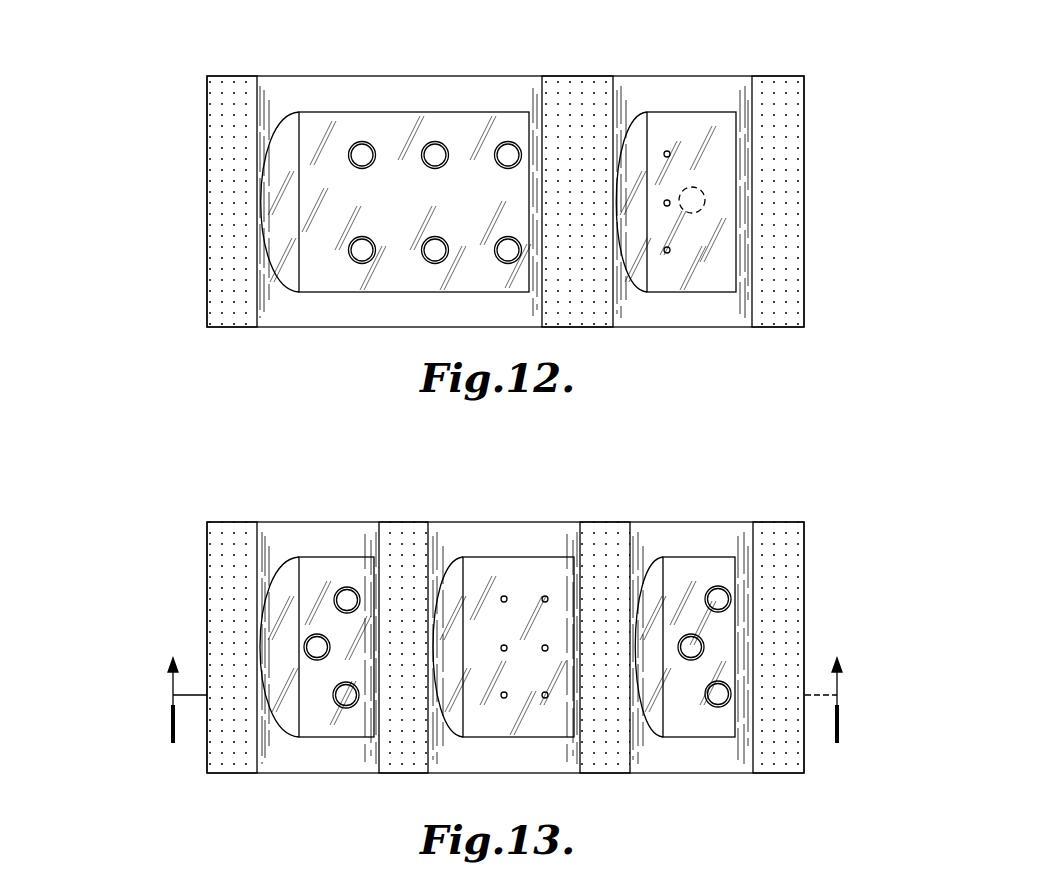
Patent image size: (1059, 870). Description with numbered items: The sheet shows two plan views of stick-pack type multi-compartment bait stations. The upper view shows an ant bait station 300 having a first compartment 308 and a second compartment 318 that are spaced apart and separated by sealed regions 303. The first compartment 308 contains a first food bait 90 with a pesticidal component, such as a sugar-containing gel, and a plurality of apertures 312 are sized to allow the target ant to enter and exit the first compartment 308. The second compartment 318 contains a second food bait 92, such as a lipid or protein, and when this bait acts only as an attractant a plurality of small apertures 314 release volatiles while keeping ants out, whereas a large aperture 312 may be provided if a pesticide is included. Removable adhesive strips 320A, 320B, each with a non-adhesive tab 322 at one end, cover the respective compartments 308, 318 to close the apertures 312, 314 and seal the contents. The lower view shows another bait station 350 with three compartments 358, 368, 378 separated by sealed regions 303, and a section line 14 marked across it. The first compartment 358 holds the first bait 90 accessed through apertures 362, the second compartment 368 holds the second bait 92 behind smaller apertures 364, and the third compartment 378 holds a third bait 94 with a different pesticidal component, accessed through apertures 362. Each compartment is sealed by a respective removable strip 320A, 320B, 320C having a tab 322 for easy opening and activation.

In FIG. 12, the ant bait station 300 is at (814, 52).
In FIG. 12, the sealed regions 303 is at (580, 85).
In FIG. 13, the sealed regions 303 is at (400, 767).
In FIG. 12, the tab 322 is at (290, 118).
In FIG. 13, the tab 322 is at (268, 612).
In FIG. 12, the removable adhesive strip 320A is at (333, 106).
In FIG. 13, the removable adhesive strip 320A is at (356, 552).
In FIG. 12, the removable adhesive strip 320B is at (722, 106).
In FIG. 13, the removable adhesive strip 320B is at (489, 552).
In FIG. 13, the removable adhesive strip 320C is at (716, 745).
In FIG. 12, the first food bait 90 is at (366, 152).
In FIG. 13, the first food bait 90 is at (344, 592).
In FIG. 12, the apertures 312 is at (437, 150).
In FIG. 12, the second food bait 92 is at (669, 154).
In FIG. 13, the second food bait 92 is at (504, 698).
In FIG. 12, the small apertures 314 is at (669, 253).
In FIG. 12, the first compartment 308 is at (336, 315).
In FIG. 12, the second compartment 318 is at (708, 308).
In FIG. 13, the bait station 350 is at (814, 501).
In FIG. 13, the section line 14- 14 is at (506, 700).
In FIG. 13, the first compartment 358 is at (288, 535).
In FIG. 13, the apertures 362 is at (718, 588).
In FIG. 13, the second compartment 368 is at (540, 540).
In FIG. 13, the apertures 364 is at (504, 596).
In FIG. 13, the third compartment 378 is at (686, 540).
In FIG. 13, the third bait 94 is at (722, 598).